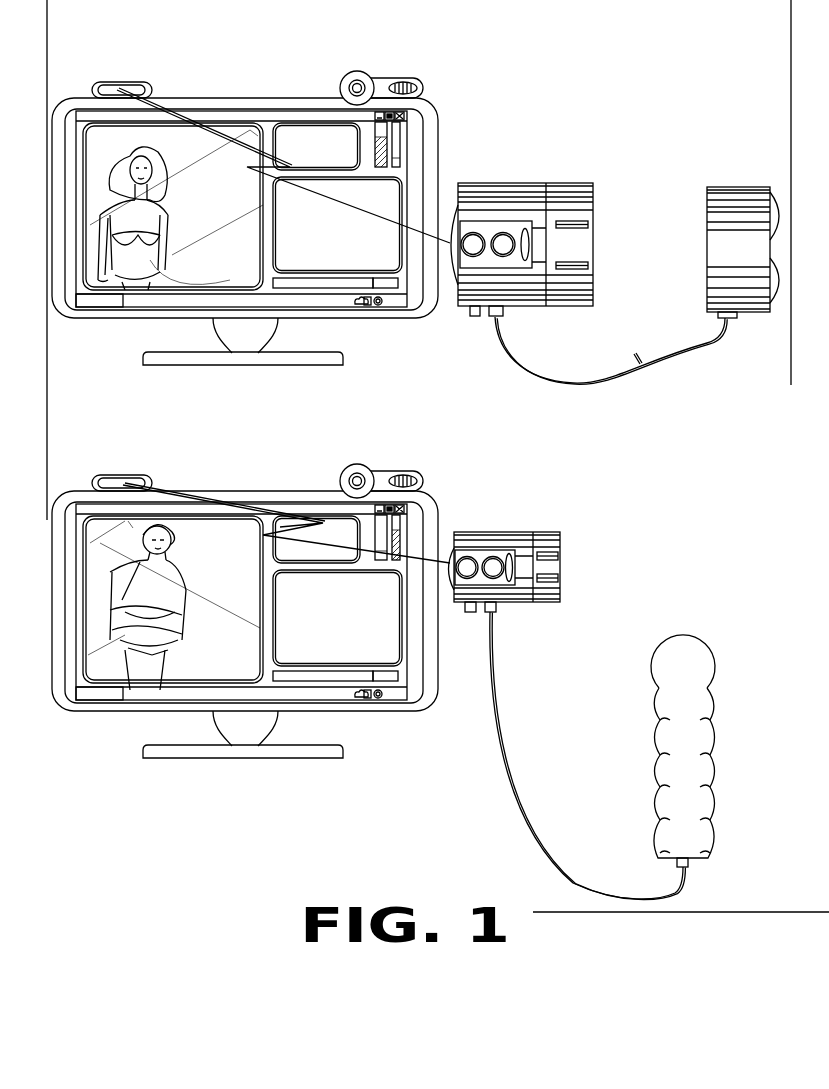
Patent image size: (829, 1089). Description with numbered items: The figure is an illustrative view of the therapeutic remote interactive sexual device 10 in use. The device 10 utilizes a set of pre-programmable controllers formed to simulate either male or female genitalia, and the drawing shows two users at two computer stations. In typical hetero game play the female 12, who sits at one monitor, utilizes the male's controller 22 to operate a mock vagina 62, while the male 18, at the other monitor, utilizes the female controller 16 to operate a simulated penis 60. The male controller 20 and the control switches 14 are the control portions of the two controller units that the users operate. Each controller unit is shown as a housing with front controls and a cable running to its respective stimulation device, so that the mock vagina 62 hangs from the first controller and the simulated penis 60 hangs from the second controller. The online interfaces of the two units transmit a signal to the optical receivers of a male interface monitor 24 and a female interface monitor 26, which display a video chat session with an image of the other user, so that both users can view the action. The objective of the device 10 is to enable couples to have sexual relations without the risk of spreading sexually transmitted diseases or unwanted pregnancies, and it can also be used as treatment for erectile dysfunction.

The therapeutic remote interactive sexual device 10 is at (629, 95).
The female 12 is at (112, 133).
The control switches of second control unit 14 is at (542, 595).
The female controller 16 is at (487, 187).
The male 18 is at (112, 528).
The male controller 20 is at (565, 306).
The male's controller 22 is at (527, 562).
The male interface monitor 24 is at (222, 100).
The female interface monitor 26 is at (242, 492).
The simulated penis 60 is at (658, 805).
The mock vagina 62 is at (723, 197).